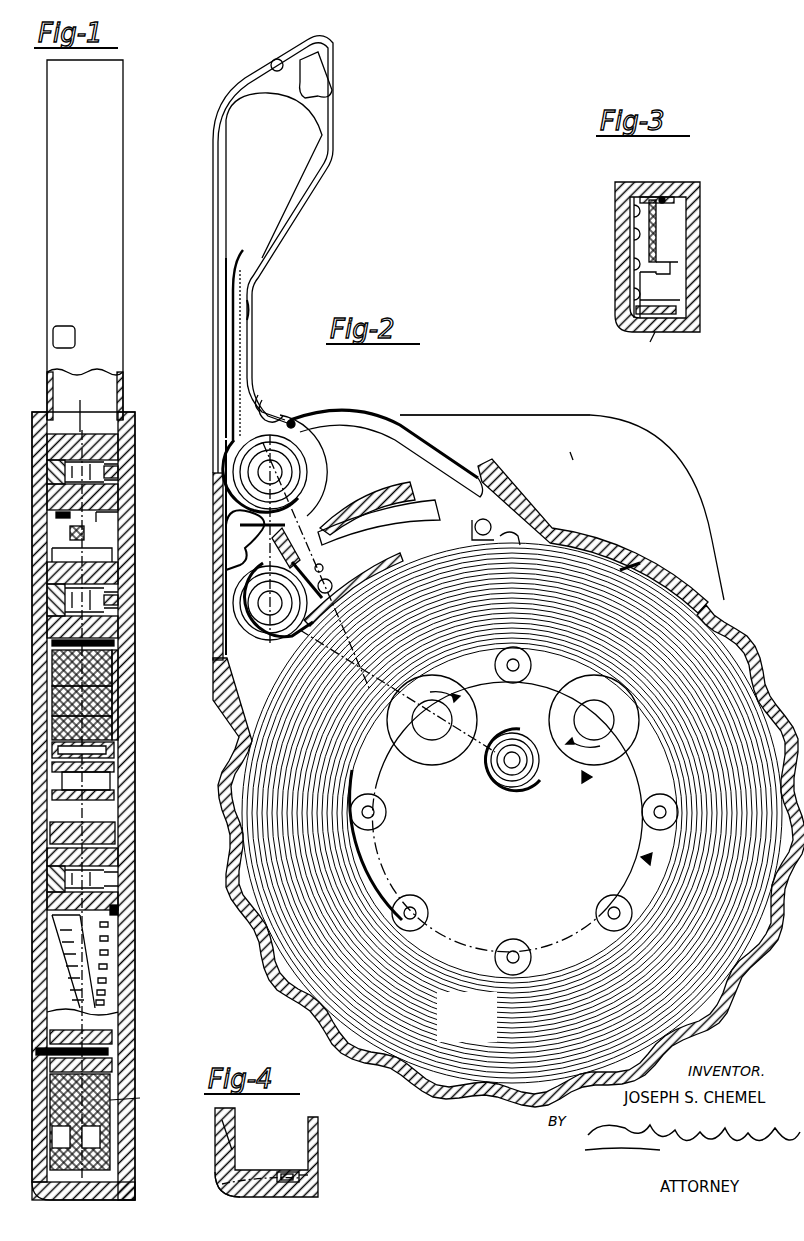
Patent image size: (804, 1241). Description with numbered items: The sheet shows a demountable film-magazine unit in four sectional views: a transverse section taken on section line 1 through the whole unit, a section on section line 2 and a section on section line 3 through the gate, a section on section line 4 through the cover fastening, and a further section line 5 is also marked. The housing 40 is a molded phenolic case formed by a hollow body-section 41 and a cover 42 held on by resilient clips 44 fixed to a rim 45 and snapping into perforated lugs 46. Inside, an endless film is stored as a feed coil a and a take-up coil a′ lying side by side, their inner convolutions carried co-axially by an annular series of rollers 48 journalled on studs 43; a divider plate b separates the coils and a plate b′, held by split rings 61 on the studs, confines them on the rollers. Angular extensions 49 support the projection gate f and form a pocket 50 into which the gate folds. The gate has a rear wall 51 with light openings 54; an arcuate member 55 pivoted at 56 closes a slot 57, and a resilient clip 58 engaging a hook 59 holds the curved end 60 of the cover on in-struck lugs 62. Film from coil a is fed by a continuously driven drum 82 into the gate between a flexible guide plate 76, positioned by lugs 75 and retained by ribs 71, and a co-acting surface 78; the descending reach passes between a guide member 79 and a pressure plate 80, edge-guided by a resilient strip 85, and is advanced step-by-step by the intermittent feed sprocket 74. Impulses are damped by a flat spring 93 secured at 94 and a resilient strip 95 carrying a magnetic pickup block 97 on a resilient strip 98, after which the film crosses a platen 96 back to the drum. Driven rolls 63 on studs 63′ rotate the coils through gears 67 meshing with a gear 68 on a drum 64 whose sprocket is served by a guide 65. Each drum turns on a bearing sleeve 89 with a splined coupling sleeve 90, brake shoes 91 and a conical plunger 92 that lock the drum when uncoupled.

In FIG. 2, the section line 1— 1 is at (243, 388).
In FIG. 1, the section line 2— 2 is at (68, 430).
In FIG. 2, the section line 3— 3 is at (275, 362).
In FIG. 2, the section line 4— 4 is at (460, 1135).
In FIG. 1, the section line 5— 5 is at (101, 430).
In FIG. 2, the housing 40 is at (245, 946).
In FIG. 1, the body-section 41 is at (110, 1012).
In FIG. 4, the body-section 41 is at (230, 1138).
In FIG. 1, the cover 42 is at (118, 945).
In FIG. 4, the cover 42 is at (320, 1130).
In FIG. 1, the studs 43 is at (112, 1065).
In FIG. 4, the resilient clips 44 is at (300, 1172).
In FIG. 4, the rim 45 is at (245, 1192).
In FIG. 4, the perforated lugs 46 is at (310, 1176).
In FIG. 1, the rollers 48 is at (112, 1036).
In FIG. 2, the rollers 48 is at (520, 680).
In FIG. 2, the angular extensions 49 is at (638, 426).
In FIG. 2, the pocket 50 is at (572, 450).
In FIG. 2, the rear wall 51 is at (212, 250).
In FIG. 1, the light openings 54 is at (75, 336).
In FIG. 2, the light openings 54 is at (255, 318).
In FIG. 2, the arcuate member 55 is at (355, 408).
In FIG. 2, the pivot 56 is at (294, 420).
In FIG. 2, the slot 57 is at (480, 495).
In FIG. 2, the resilient clip 58 is at (272, 62).
In FIG. 2, the hook 59 is at (318, 96).
In FIG. 2, the curved end 60 is at (280, 410).
In FIG. 1, the split rings 61 is at (108, 1052).
In FIG. 2, the in-struck lugs 62 is at (268, 395).
In FIG. 1, the driven rolls 63 is at (114, 750).
In FIG. 2, the driven rolls 63 is at (445, 680).
In FIG. 1, the studs 63′ is at (114, 780).
In FIG. 1, the drum 64 is at (115, 832).
In FIG. 2, the drum 64 is at (560, 790).
In FIG. 2, the guide 65 is at (505, 790).
In FIG. 1, the gear 67 is at (118, 735).
In FIG. 1, the gear 68 is at (118, 912).
In FIG. 3, the ribs 71 is at (650, 344).
In FIG. 1, the intermittent feed sprocket 74 is at (72, 430).
In FIG. 2, the intermittent feed sprocket 74 is at (300, 460).
In FIG. 2, the lugs 75 is at (224, 518).
In FIG. 2, the flexible guide plate 76 is at (214, 425).
In FIG. 3, the flexible guide plate 76 is at (620, 258).
In FIG. 3, the co-acting surface 78 is at (660, 292).
In FIG. 3, the guide member 79 is at (680, 262).
In FIG. 3, the pressure plate 80 is at (662, 250).
In FIG. 1, the drum 82 is at (118, 516).
In FIG. 2, the drum 82 is at (232, 608).
In FIG. 3, the resilient strip 85 is at (672, 196).
In FIG. 1, the bearing sleeve 89 is at (112, 556).
In FIG. 1, the coupling sleeve 90 is at (78, 540).
In FIG. 1, the brake shoes 91 is at (70, 515).
In FIG. 1, the conical plunger 92 is at (114, 643).
In FIG. 2, the flat spring 93 is at (512, 530).
In FIG. 2, the securing point 94 is at (500, 492).
In FIG. 2, the resilient strip 95 is at (372, 568).
In FIG. 2, the platen 96 is at (228, 544).
In FIG. 2, the magnetic pickup block 97 is at (308, 545).
In FIG. 2, the resilient strip 98 is at (318, 560).
In FIG. 1, the coil of film a is at (112, 695).
In FIG. 1, the take-up coil of film a′ is at (112, 668).
In FIG. 2, the take-up coil of film a′ is at (600, 600).
In FIG. 1, the divider plate b is at (112, 728).
In FIG. 1, the plate b′ is at (102, 1122).
In FIG. 2, the projection gate f is at (250, 300).